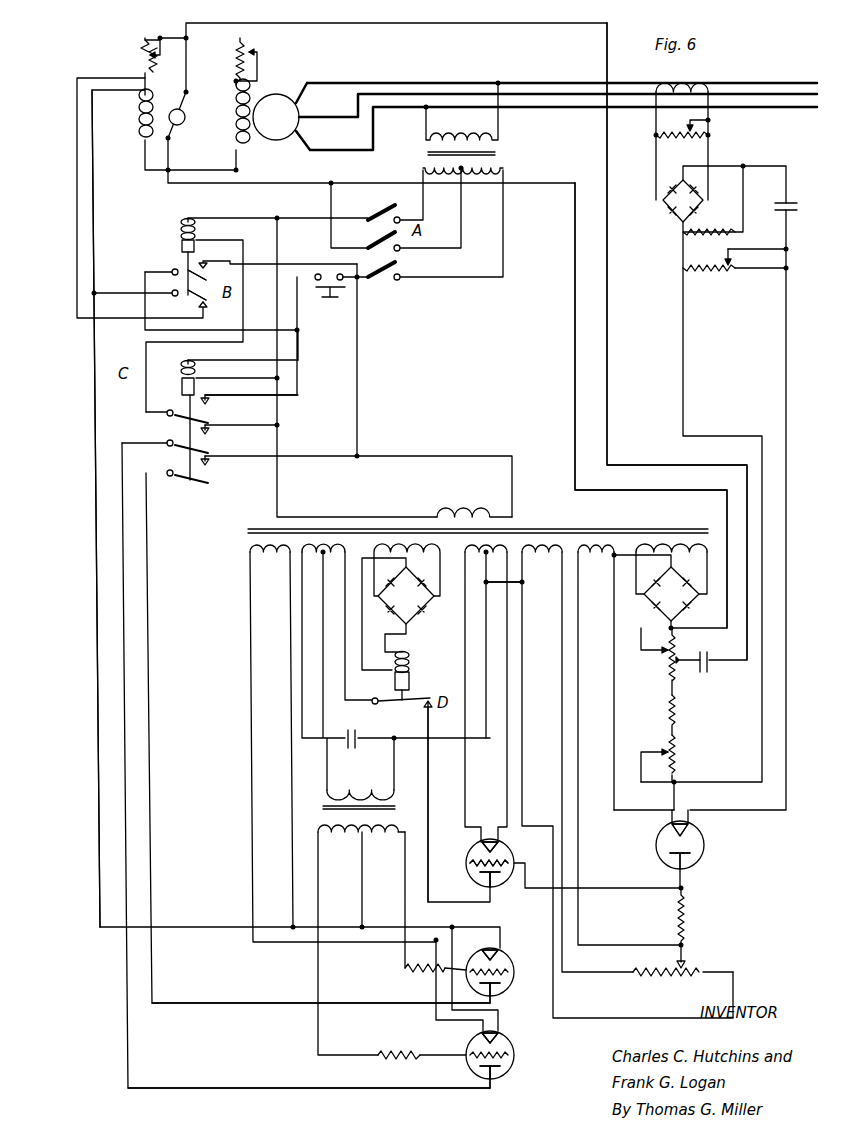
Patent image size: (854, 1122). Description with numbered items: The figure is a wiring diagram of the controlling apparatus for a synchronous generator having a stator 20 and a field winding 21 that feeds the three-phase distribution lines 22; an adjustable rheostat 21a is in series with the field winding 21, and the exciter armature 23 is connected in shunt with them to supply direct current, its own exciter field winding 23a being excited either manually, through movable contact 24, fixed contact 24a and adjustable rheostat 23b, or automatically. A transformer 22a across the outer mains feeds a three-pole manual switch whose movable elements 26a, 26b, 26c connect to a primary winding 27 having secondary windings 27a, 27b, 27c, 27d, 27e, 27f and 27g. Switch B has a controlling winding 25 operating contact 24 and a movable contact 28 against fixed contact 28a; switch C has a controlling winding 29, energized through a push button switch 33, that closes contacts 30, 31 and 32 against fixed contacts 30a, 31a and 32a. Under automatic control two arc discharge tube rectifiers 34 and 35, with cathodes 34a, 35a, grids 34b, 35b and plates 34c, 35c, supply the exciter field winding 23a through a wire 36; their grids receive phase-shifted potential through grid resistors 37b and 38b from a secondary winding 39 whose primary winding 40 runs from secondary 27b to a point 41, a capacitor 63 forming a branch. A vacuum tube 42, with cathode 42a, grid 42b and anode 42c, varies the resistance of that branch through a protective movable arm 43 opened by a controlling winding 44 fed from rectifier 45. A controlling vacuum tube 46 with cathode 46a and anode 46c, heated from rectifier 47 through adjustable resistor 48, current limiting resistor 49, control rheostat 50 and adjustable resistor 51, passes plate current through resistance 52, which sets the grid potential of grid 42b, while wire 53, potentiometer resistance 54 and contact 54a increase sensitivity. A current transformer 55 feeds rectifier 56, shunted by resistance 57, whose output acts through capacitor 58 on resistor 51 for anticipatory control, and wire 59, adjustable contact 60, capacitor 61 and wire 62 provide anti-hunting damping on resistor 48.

The stator 20 is at (292, 96).
The field winding 21 is at (255, 85).
The adjustable rheostat 21a is at (248, 38).
The three-phase distribution lines 22 is at (555, 102).
The transformer 22a is at (500, 158).
The exciter armature 23 is at (186, 120).
The exciter field winding 23a is at (145, 95).
The adjustable rheostat 23b is at (142, 55).
The movable contact 24 is at (178, 296).
The fixed contact 24a is at (211, 307).
The controlling winding 25 is at (181, 229).
The movable element 26a is at (368, 212).
The movable element 26b is at (368, 240).
The movable element 26c is at (398, 270).
The primary winding 27 is at (470, 500).
The secondary winding 27a is at (275, 553).
The secondary winding 27b is at (333, 553).
The secondary winding 27c is at (408, 548).
The secondary winding 27d is at (492, 553).
The secondary winding 27e is at (547, 553).
The secondary winding 27f is at (604, 553).
The secondary winding 27g is at (696, 550).
The movable contact 28 is at (175, 268).
The fixed contact 28a is at (212, 273).
The controlling winding 29 is at (181, 369).
The movable contact 30 is at (170, 420).
The fixed contact 30a is at (209, 402).
The movable contact 31 is at (170, 449).
The fixed contact 31a is at (209, 432).
The movable contact 32 is at (172, 478).
The fixed contact 32a is at (209, 463).
The push button switch 33 is at (326, 290).
The arc discharge tube rectifier 34 is at (508, 958).
The cathode 34a is at (500, 945).
The control grid 34b is at (500, 984).
The plate 34c is at (495, 1003).
The arc discharge tube rectifier 35 is at (508, 1058).
The cathode 35a is at (504, 1040).
The control grid 35b is at (502, 1068).
The plate 35c is at (490, 1090).
The wire 36 is at (96, 640).
The grid resistor 37b is at (408, 972).
The grid resistor 38b is at (400, 1050).
The secondary winding 39 is at (388, 833).
The primary winding 40 is at (368, 780).
The point 41 is at (424, 712).
The vacuum tube 42 is at (508, 850).
The cathode 42a is at (478, 844).
The grid 42b is at (470, 864).
The anode 42c is at (482, 876).
The protective movable arm 43 is at (410, 680).
The controlling winding 44 is at (410, 660).
The bridge-connected contact rectifier 45 is at (420, 604).
The controlling vacuum tube 46 is at (705, 842).
The cathode 46a is at (670, 826).
The anode 46c is at (670, 856).
The bridge-connected rectifier 47 is at (650, 600).
The adjustable resistor 48 is at (667, 659).
The fixed current limiting resistor 49 is at (678, 712).
The control rheostat 50 is at (678, 742).
The adjustable resistor 51 is at (700, 272).
The series fixed resistance 52 is at (688, 908).
The connecting wire 53 is at (512, 584).
The potentiometer resistance 54 is at (668, 976).
The adjustable contact 54a is at (690, 962).
The current transformer 55 is at (690, 86).
The rectifier 56 is at (663, 202).
The adjustable resistance 57 is at (690, 140).
The capacitor 58 is at (788, 200).
The wire 59 is at (574, 348).
The adjustable contact 60 is at (684, 656).
The capacitor 61 is at (709, 668).
The wire 62 is at (609, 352).
The capacitor 63 is at (348, 732).